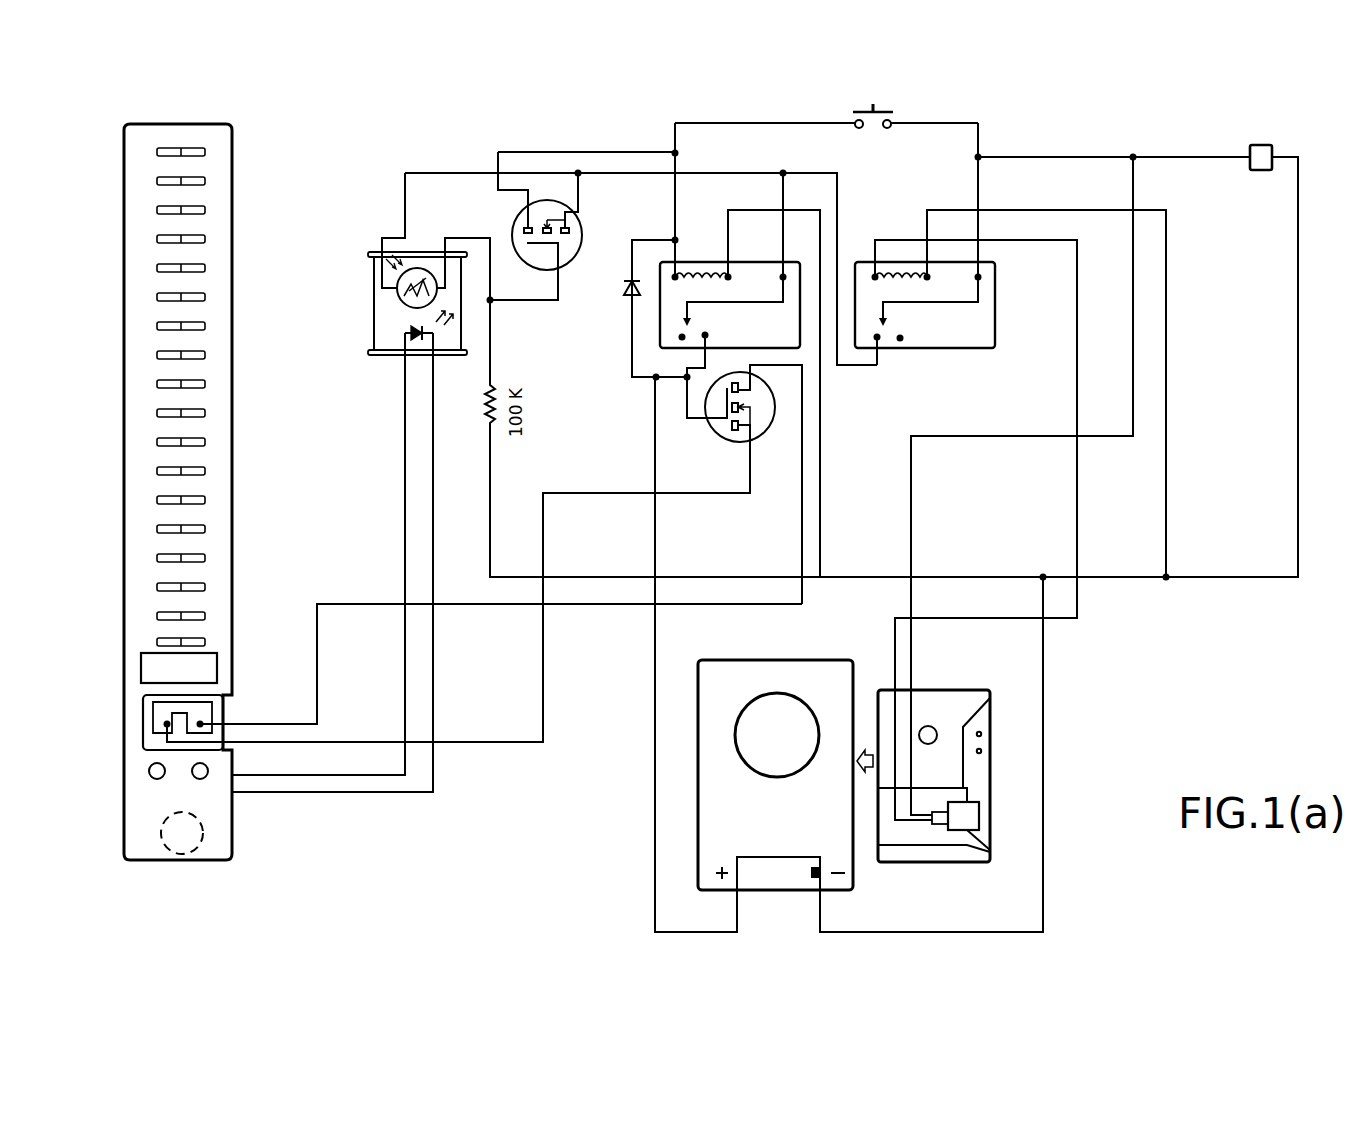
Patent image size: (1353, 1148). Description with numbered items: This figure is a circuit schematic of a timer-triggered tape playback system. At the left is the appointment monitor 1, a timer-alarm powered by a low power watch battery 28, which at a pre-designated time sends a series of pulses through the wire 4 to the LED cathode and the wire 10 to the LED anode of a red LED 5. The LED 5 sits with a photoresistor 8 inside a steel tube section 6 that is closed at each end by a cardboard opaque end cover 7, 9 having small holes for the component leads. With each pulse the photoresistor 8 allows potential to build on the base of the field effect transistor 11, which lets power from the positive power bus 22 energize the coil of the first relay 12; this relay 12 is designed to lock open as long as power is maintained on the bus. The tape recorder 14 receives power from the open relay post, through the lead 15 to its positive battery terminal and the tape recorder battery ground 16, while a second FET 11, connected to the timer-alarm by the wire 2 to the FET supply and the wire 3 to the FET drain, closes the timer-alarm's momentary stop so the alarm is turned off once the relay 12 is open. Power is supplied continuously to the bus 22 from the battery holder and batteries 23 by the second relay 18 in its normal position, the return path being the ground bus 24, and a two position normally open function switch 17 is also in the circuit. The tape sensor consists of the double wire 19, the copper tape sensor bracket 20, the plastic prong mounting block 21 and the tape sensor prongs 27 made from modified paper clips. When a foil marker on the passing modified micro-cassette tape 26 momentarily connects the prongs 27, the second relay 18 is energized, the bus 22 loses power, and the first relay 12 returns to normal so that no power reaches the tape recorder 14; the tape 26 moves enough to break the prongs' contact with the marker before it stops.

The appointment monitor 1 is at (232, 852).
The wire connecting alarm/timer to FET supply 2 is at (317, 667).
The wire connecting alarm/timer to FET drain 3 is at (376, 742).
The wire from timer/alarm to LED cathode 4 is at (403, 474).
The red LED 5 is at (400, 340).
The steel tube section 6 is at (373, 308).
The cardboard opaque end cover 7 is at (373, 250).
The photoresistor 8 is at (422, 256).
The cardboard opaque end cover 9 is at (413, 250).
The wire from alarm/timer to LED anode 10 is at (433, 482).
The field effect transistor 11 is at (582, 258).
The first relay 12 is at (658, 320).
The modified tape recorder 14 is at (718, 660).
The power to tape recorder's positive battery terminal 15 is at (700, 933).
The tape recorder battery ground 16 is at (840, 933).
The function switch 17 is at (882, 105).
The second relay 18 is at (933, 350).
The double wire 19 is at (910, 656).
The tape sensor bracket 20 is at (947, 786).
The prong mounting block 21 is at (950, 833).
The positive power bus 22 is at (1218, 162).
The AA battery holder and batteries 23 is at (1262, 143).
The ground bus 24 is at (1278, 165).
The modified micro-cassette tape 26 is at (952, 690).
The tape sensor prongs 27 is at (979, 813).
The low power watch battery 28 is at (165, 850).